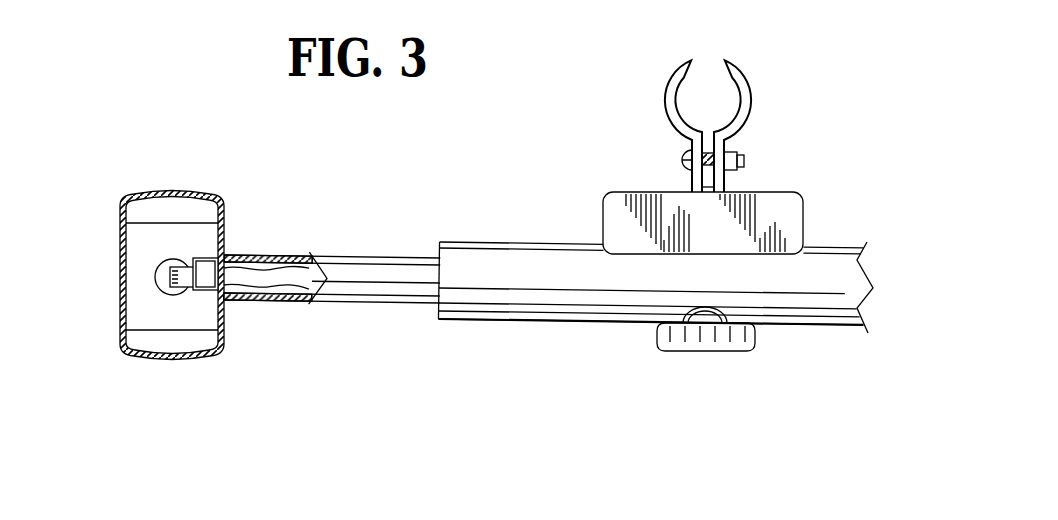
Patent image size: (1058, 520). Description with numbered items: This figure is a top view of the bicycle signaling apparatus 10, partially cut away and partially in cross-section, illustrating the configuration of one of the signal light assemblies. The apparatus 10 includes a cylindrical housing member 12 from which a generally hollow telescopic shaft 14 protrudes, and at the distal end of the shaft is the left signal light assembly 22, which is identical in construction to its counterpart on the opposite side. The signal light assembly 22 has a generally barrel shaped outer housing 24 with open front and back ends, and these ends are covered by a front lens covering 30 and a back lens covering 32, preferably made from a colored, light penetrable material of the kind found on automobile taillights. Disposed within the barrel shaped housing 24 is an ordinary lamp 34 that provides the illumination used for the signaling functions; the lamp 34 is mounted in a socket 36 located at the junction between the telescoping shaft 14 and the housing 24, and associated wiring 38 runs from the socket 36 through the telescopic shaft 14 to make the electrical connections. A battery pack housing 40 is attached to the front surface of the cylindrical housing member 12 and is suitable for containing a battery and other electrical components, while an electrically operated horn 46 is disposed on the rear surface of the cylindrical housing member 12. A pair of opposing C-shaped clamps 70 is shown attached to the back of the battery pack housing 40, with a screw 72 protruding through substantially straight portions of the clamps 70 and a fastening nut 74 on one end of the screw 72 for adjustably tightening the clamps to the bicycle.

The bicycle signaling apparatus 10 is at (484, 121).
The cylindrical housing member 12 is at (601, 334).
The telescopic shaft 14 is at (378, 273).
The left signal light assembly 22 is at (106, 366).
The barrel shaped outer housing 24 is at (120, 280).
The front lens covering 30 is at (163, 191).
The back lens covering 32 is at (160, 362).
The lamp 34 is at (178, 268).
The socket 36 is at (224, 298).
The wiring 38 is at (268, 283).
The battery pack housing 40 is at (618, 218).
The horn 46 is at (712, 342).
The C-shaped clamps 70 is at (673, 85).
The screw 72 is at (682, 152).
The fastening nut 74 is at (744, 158).